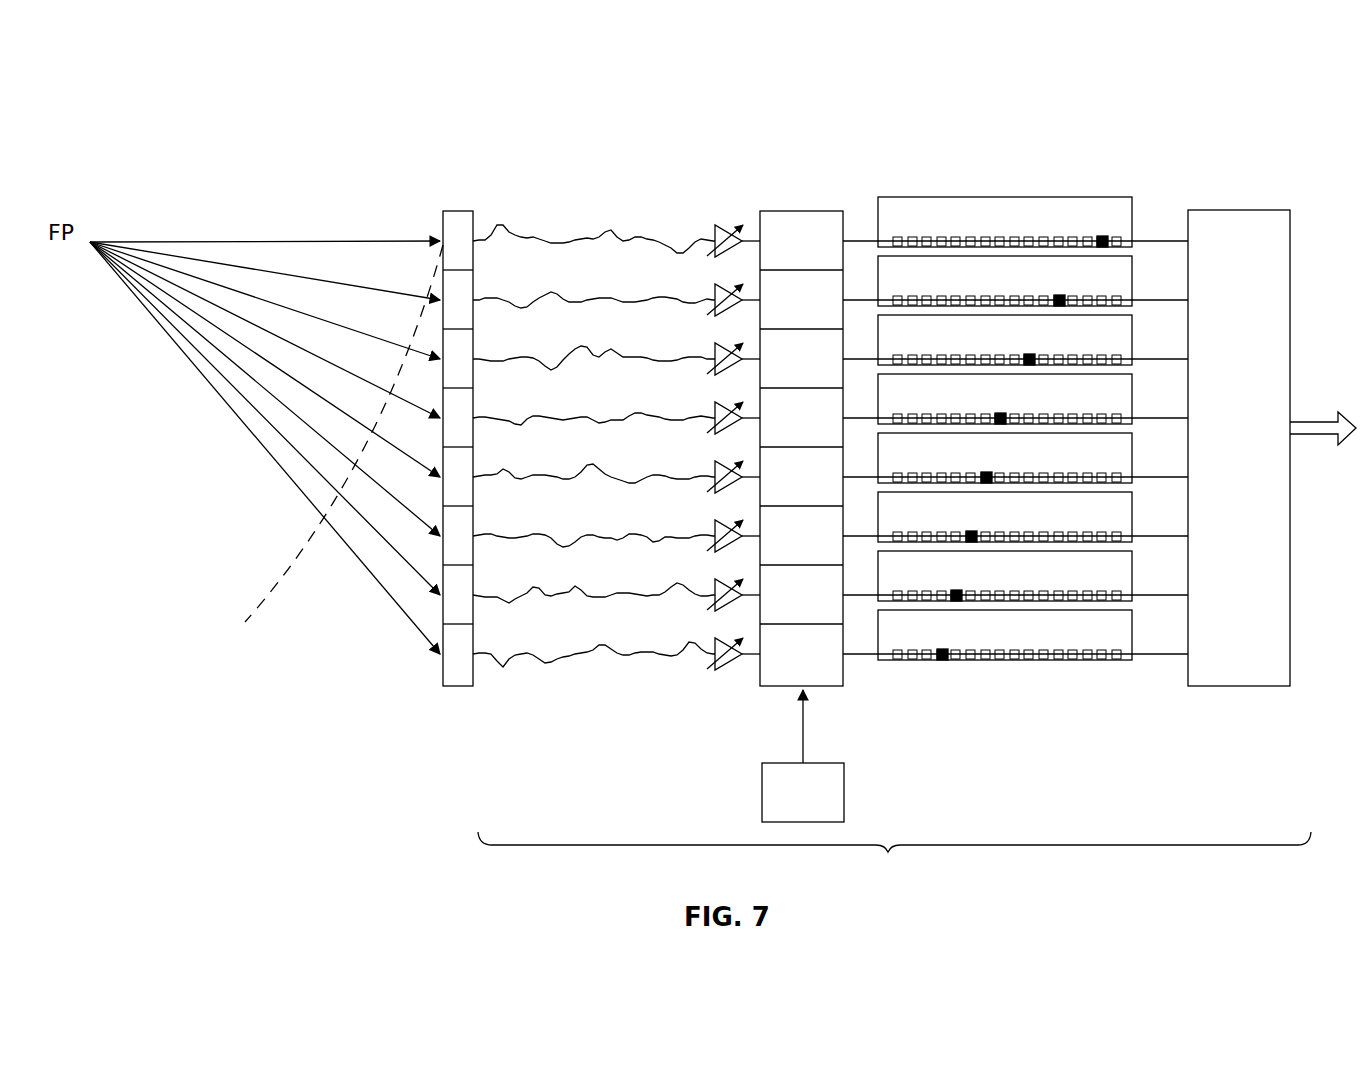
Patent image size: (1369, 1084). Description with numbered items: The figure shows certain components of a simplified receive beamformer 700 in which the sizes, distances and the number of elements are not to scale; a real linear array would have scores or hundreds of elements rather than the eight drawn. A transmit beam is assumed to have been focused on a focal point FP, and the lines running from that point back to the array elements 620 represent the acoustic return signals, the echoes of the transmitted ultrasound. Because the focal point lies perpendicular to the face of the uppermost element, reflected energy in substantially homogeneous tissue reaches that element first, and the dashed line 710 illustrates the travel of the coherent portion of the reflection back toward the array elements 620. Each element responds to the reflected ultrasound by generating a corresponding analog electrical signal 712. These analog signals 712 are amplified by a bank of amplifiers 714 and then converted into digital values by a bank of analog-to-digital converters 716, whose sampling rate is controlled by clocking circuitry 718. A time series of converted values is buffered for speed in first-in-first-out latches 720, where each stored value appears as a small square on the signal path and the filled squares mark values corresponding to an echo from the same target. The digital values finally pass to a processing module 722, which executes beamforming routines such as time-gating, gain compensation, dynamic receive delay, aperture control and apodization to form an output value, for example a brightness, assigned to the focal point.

The receive beamformer 700 is at (894, 865).
The dashed line 710 is at (307, 552).
The array elements 620 is at (458, 207).
The analog electrical signal 712 is at (606, 208).
The bank of amplifiers 714 is at (728, 195).
The bank of analog-to-digital converters 716 is at (809, 185).
The clocking circuitry 718 is at (777, 762).
The first-in-first-out latches 720 is at (1014, 184).
The processing module 722 is at (1238, 210).